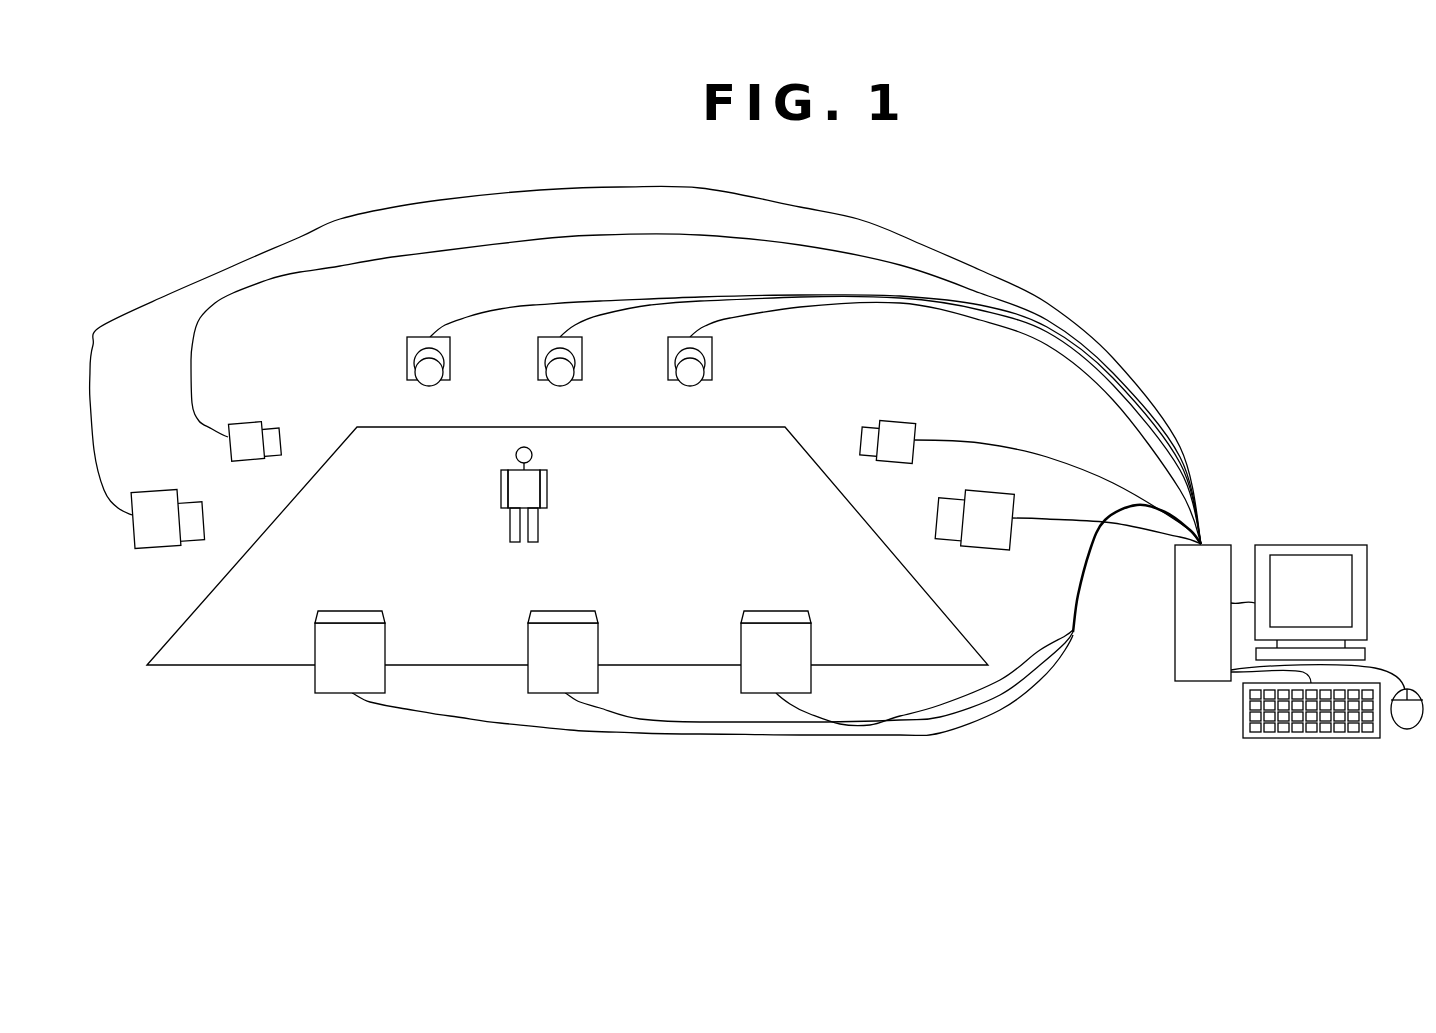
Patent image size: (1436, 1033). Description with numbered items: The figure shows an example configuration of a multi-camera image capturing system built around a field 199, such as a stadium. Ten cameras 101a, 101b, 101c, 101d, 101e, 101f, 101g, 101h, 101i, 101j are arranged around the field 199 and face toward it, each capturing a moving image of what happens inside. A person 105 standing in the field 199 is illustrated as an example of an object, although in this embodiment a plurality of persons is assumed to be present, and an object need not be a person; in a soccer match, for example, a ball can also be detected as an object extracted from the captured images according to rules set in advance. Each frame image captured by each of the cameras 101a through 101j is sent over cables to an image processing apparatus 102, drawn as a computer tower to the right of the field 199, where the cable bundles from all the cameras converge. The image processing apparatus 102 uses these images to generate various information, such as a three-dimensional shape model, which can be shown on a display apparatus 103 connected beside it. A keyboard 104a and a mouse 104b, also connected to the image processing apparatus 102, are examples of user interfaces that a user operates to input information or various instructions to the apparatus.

The camera 101a is at (1013, 505).
The camera 101b is at (895, 422).
The camera 101c is at (692, 385).
The camera 101d is at (562, 385).
The camera 101e is at (430, 385).
The camera 101f is at (253, 422).
The camera 101g is at (178, 477).
The camera 101h is at (380, 592).
The camera 101i is at (593, 592).
The camera 101j is at (806, 592).
The image processing apparatus 102 is at (1217, 545).
The display apparatus 103 is at (1367, 571).
The keyboard 104a is at (1277, 738).
The mouse 104b is at (1407, 729).
The person 105 is at (548, 483).
The field 199 is at (173, 636).